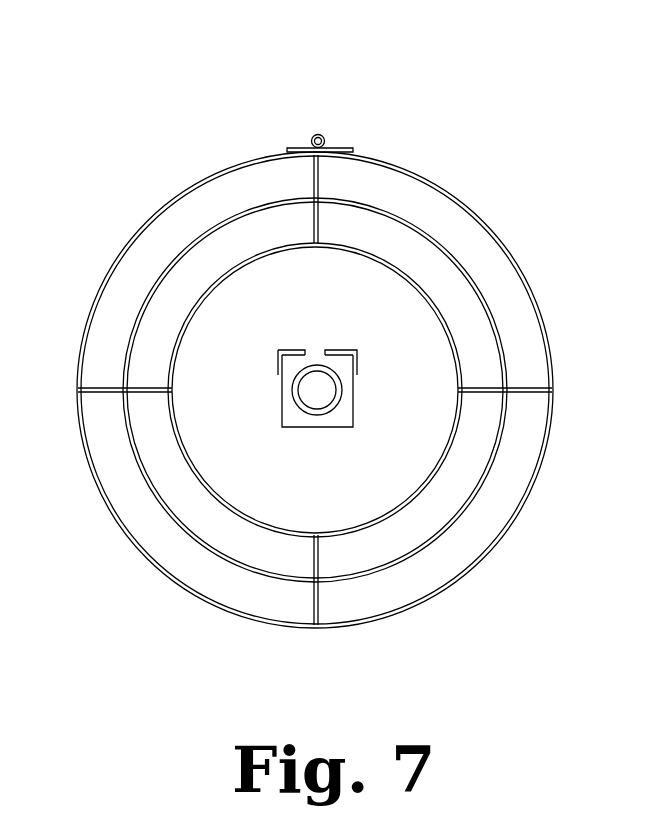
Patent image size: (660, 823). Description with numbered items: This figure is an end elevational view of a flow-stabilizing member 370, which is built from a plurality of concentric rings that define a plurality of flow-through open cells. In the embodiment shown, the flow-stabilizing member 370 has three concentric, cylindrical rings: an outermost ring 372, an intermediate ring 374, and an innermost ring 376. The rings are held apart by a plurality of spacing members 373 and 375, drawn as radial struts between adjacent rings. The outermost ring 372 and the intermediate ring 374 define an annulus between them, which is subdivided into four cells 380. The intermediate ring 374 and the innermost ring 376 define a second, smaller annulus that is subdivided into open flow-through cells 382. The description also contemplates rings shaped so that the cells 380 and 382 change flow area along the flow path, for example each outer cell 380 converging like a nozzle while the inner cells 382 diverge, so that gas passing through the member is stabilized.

The flow-stabilizing member 370 is at (447, 82).
The outermost ring 372 is at (470, 213).
The intermediate ring 374 is at (480, 288).
The innermost ring 376 is at (462, 363).
The spacing member 373 is at (527, 395).
The spacing member 375 is at (480, 397).
The flow-through cell 380 is at (430, 570).
The open flow-through cell 382 is at (222, 532).